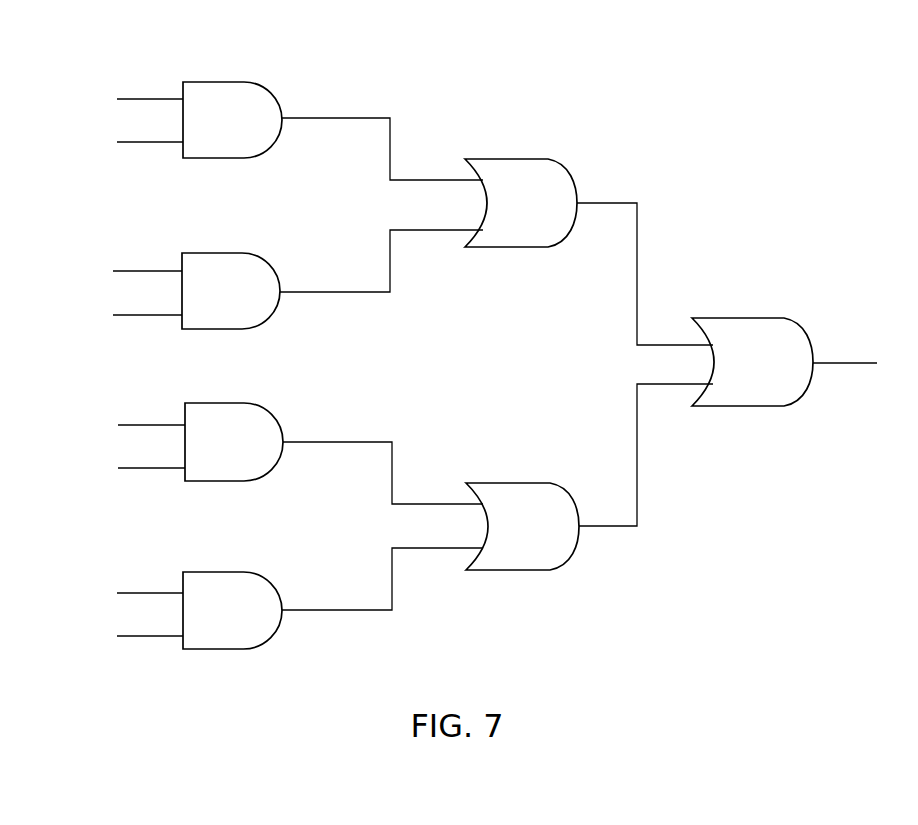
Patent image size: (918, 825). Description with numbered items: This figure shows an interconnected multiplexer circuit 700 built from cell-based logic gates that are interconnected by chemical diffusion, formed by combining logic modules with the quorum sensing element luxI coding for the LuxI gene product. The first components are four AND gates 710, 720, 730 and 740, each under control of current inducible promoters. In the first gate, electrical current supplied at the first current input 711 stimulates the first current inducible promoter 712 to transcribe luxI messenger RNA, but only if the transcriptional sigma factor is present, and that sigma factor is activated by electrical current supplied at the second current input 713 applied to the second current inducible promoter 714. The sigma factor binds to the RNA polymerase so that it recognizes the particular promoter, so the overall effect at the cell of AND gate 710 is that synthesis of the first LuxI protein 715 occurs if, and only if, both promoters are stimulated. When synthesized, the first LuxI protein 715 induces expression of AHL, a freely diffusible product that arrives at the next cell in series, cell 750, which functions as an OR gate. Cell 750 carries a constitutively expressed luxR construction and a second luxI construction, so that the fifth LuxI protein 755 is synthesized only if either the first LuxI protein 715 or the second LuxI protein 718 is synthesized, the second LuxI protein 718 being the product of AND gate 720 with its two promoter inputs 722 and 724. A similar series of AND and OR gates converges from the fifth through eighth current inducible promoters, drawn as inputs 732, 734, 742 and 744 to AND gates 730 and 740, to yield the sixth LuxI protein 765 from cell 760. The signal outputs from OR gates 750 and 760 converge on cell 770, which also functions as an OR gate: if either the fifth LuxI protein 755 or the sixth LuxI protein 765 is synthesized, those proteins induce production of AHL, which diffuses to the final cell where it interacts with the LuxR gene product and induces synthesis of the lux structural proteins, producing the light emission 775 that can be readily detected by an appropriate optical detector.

The multiplexer circuit 700 is at (452, 46).
The AND gate 710 is at (232, 120).
The electrical current input A1 711 is at (61, 80).
The Pe-1 promoter 712 is at (122, 63).
The electrical current input A2 713 is at (60, 126).
The Pe-2 promoter 714 is at (87, 142).
The LuxI1 715 is at (293, 102).
The LuxI2 718 is at (308, 293).
The AND gate 720 is at (231, 291).
The current inducible promoter input 722 is at (95, 233).
The current inducible promoter input 724 is at (78, 317).
The AND gate 730 is at (234, 442).
The current inducible promoter Pe-5 732 is at (118, 385).
The current inducible promoter Pe-6 734 is at (88, 465).
The AND gate 740 is at (232, 610).
The current inducible promoter Pe-7 742 is at (118, 558).
The current inducible promoter Pe-8 744 is at (97, 638).
The OR gate cell 750 is at (521, 203).
The LuxI5 755 is at (613, 168).
The OR gate cell 760 is at (522, 526).
The LuxI6 765 is at (620, 533).
The OR gate cell 770 is at (752, 362).
The light emission 775 is at (844, 328).